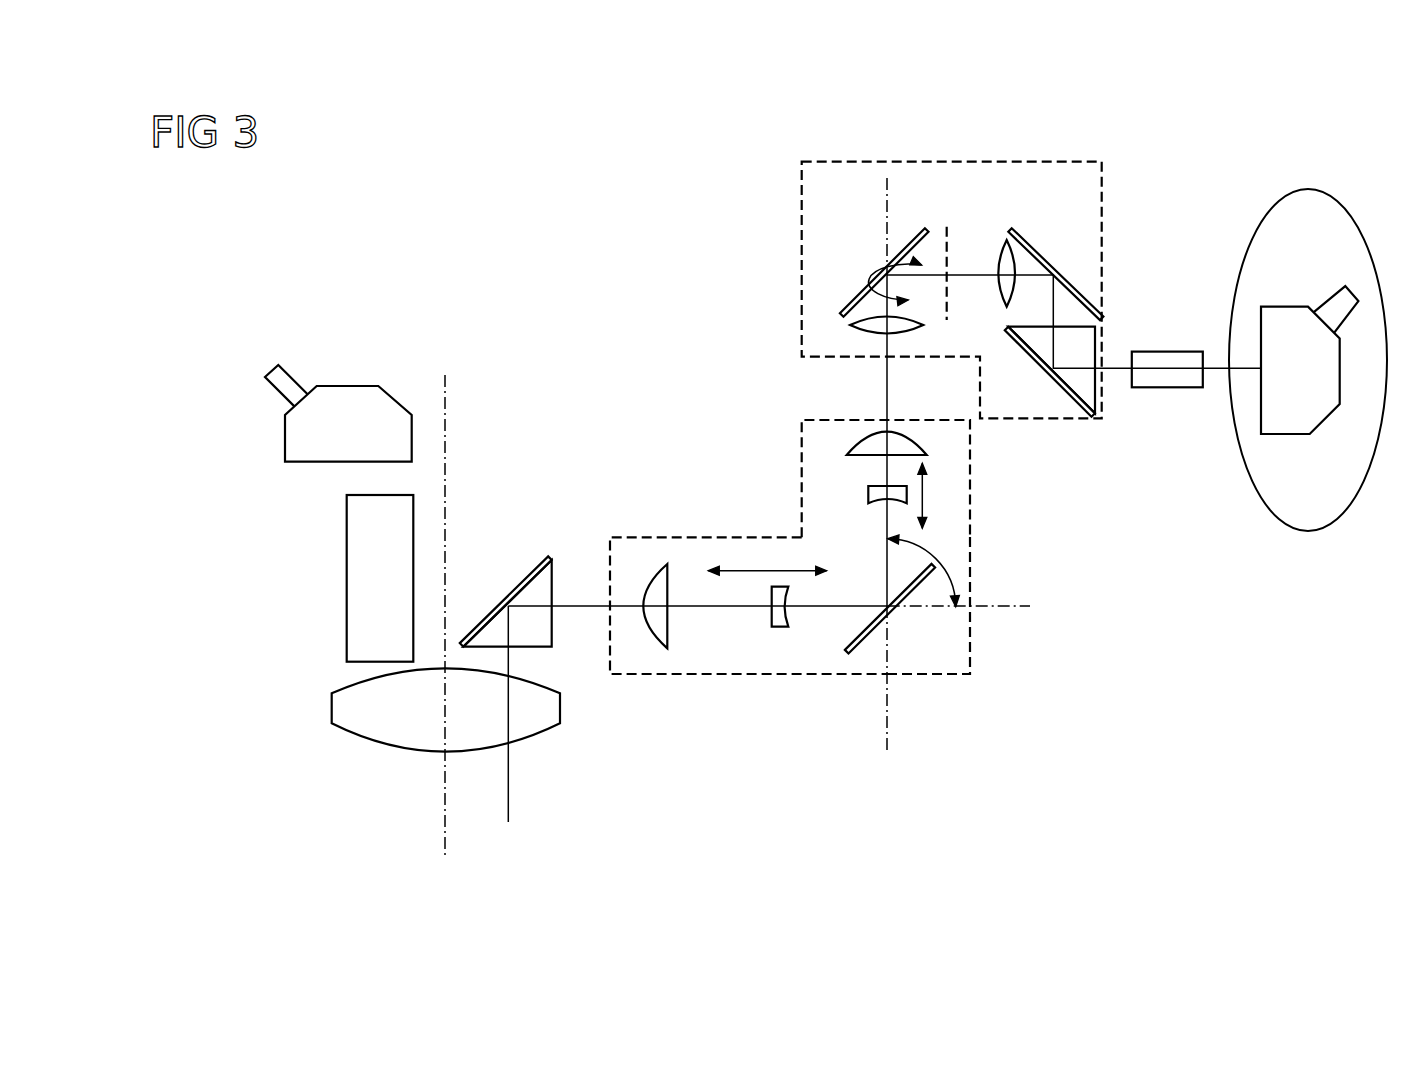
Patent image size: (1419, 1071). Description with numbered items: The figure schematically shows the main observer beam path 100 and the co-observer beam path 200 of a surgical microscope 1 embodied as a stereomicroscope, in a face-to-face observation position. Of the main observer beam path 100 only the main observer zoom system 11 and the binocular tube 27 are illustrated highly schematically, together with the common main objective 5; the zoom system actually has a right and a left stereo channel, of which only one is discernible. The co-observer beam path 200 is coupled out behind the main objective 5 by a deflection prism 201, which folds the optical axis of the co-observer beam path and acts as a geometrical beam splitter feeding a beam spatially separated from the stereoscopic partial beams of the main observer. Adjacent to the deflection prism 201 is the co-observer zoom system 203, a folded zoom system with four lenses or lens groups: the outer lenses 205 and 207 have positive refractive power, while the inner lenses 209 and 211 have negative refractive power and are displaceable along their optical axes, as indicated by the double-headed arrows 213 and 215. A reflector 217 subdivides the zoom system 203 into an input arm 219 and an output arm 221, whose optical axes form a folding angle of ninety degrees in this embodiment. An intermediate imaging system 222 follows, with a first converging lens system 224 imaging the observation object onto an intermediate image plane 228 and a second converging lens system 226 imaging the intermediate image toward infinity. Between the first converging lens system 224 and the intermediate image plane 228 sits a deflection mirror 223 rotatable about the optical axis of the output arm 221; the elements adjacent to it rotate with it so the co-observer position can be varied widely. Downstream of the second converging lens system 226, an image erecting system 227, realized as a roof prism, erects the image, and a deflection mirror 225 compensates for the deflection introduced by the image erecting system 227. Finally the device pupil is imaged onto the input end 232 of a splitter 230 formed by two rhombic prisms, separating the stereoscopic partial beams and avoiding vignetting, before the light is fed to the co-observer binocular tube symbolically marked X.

The surgical microscope 1 is at (565, 196).
The main objective 5 is at (332, 710).
The main observer zoom system 11 is at (347, 585).
The binocular tube 27 is at (285, 447).
The main observer beam path 100 is at (230, 584).
The co-observer beam path 200 is at (690, 362).
The deflection prism 201 is at (520, 583).
The co-observer zoom system 203 is at (932, 648).
The outer lens or lens group 205 is at (665, 648).
The outer lens or lens group 207 is at (915, 435).
The inner lens or lens group 209 is at (782, 628).
The inner lens or lens group 211 is at (868, 497).
The double-headed arrow 213 is at (760, 568).
The double-headed arrow 215 is at (927, 497).
The reflector 217 is at (872, 633).
The input arm 219 is at (680, 537).
The output arm 221 is at (802, 432).
The intermediate imaging system 222 is at (1102, 208).
The deflection mirror 223 is at (900, 248).
The first converging lens system 224 is at (862, 335).
The deflection mirror 225 is at (1030, 243).
The second converging lens system 226 is at (1003, 250).
The image erecting system 227 is at (1023, 347).
The intermediate image plane 228 is at (947, 227).
The splitter 230 is at (1160, 352).
The input end of the splitter 232 is at (1118, 392).
The surgical microscope (schematic) X is at (1261, 496).